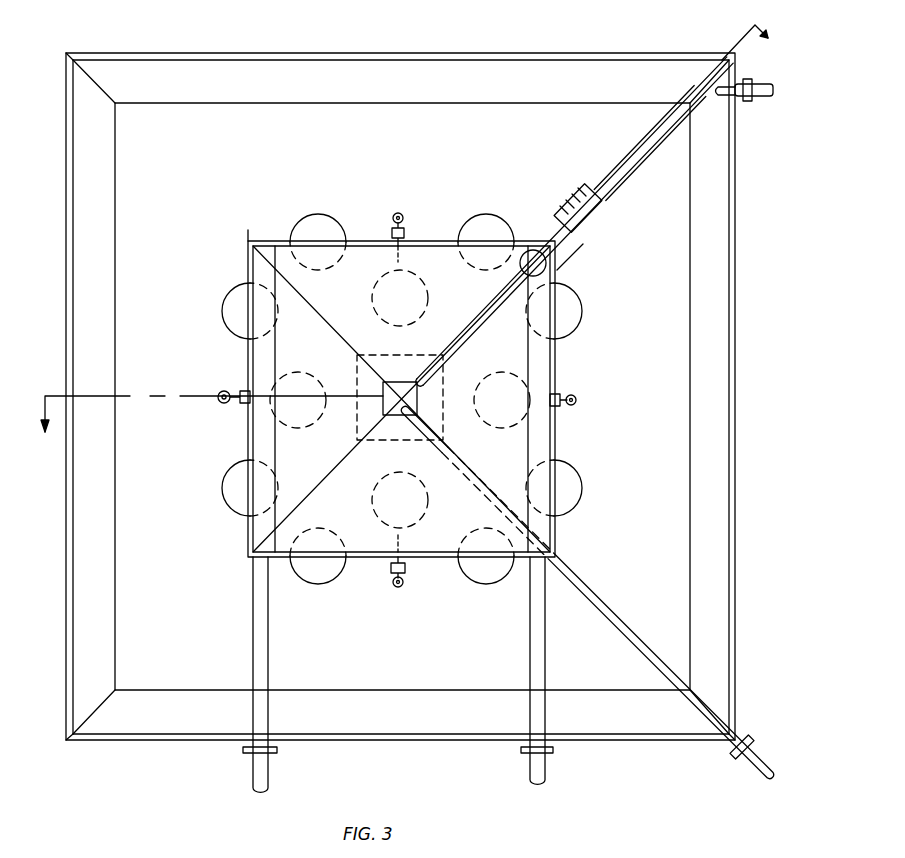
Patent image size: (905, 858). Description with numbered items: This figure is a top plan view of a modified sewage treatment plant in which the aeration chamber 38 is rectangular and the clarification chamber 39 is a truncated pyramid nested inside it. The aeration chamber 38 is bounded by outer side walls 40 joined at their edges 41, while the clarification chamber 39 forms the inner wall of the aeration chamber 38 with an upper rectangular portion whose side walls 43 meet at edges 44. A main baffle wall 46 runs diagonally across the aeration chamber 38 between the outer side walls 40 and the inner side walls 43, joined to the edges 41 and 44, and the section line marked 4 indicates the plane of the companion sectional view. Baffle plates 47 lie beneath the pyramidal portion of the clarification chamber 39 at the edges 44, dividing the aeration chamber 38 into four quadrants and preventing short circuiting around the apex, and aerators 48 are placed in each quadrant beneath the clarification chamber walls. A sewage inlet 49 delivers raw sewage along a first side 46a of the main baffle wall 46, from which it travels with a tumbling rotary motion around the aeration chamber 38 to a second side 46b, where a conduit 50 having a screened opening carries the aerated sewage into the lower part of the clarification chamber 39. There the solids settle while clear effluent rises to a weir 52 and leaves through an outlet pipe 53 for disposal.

The section line 4- 4 is at (408, 243).
The aeration chamber 38 is at (152, 324).
The clarification chamber 39 is at (332, 362).
The outer side walls 40 is at (305, 53).
The edges 41 is at (68, 53).
The side walls 43 is at (392, 222).
The edges 44 is at (250, 240).
The main baffle wall 46 is at (620, 185).
The first side of the main baffle wall 46a is at (655, 140).
The second side of the main baffle wall 46b is at (628, 156).
The baffle plates 47 is at (328, 312).
The aerators 48 is at (318, 214).
The sewage inlet 49 is at (752, 100).
The conduit 50 is at (566, 196).
The weir 52 is at (253, 262).
The outlet pipe 53 is at (253, 780).